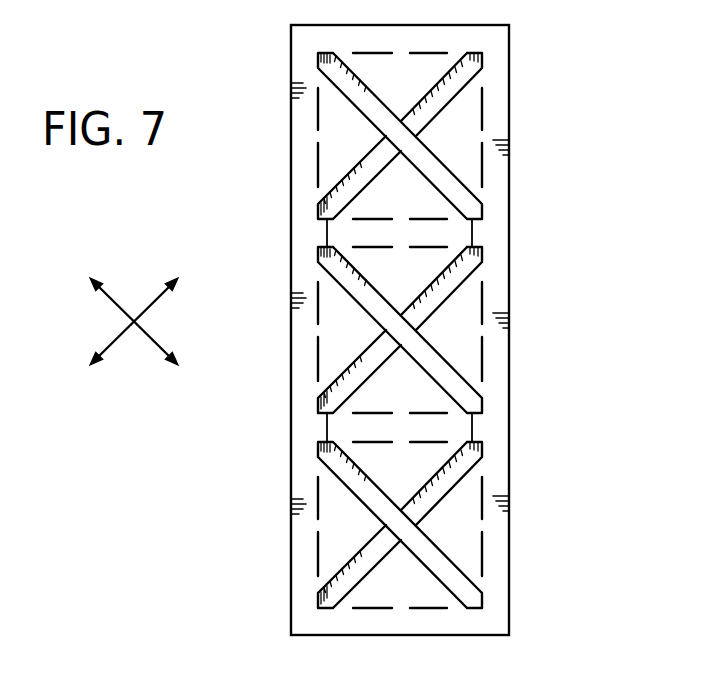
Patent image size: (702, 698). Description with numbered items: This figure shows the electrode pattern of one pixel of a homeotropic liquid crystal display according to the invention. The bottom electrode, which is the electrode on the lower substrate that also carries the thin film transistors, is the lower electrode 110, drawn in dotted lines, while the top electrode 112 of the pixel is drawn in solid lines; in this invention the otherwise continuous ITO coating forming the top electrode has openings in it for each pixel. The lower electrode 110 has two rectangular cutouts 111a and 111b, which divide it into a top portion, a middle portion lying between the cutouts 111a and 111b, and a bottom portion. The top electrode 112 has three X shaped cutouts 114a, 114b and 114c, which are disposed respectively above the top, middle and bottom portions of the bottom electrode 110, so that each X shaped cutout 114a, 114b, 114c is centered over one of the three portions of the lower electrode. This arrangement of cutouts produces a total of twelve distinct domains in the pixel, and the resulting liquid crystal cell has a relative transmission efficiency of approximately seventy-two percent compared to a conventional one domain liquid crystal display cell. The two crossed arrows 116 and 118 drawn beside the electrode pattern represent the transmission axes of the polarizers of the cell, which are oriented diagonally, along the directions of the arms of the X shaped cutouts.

The lower electrode 110 is at (483, 100).
The top electrode 112 is at (509, 125).
The X shaped cutout 114a is at (453, 185).
The X shaped cutout 114b is at (452, 380).
The X shaped cutout 114c is at (437, 560).
The rectangular cutout 111a is at (460, 232).
The rectangular cutout 111b is at (460, 429).
The arrow 116 is at (117, 340).
The arrow 118 is at (150, 340).